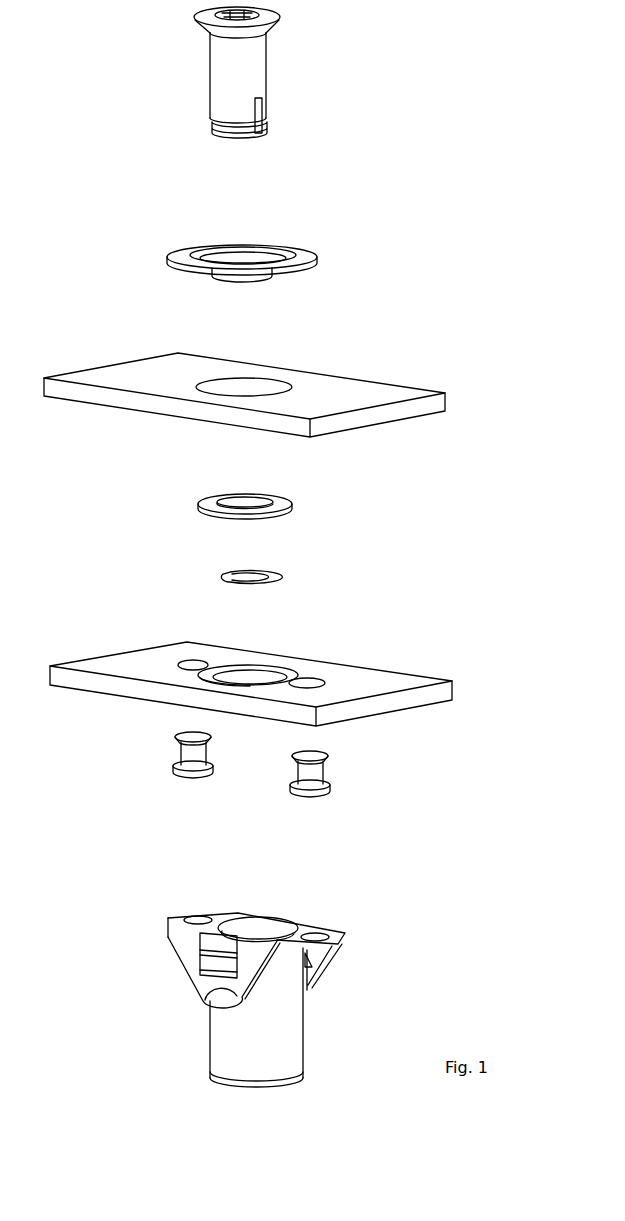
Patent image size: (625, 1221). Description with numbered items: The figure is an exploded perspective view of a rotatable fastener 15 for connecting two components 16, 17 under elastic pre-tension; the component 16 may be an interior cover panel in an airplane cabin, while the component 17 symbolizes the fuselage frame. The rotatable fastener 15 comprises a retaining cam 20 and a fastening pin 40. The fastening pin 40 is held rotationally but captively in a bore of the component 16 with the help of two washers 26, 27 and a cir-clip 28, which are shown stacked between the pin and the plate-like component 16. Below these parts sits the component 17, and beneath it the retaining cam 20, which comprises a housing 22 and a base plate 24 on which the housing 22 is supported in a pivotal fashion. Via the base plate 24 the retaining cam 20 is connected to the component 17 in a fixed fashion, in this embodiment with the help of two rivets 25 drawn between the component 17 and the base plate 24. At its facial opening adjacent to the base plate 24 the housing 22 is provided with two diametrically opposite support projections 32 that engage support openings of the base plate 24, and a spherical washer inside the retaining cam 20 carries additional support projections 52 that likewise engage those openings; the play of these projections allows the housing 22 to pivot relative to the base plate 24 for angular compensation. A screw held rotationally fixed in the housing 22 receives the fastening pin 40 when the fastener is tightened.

The rotatable fastener 15 is at (462, 533).
The fastening pin 40 is at (240, 73).
The washer 26 is at (296, 263).
The component 16 is at (343, 400).
The washer 27 is at (290, 501).
The cir-clip 28 is at (281, 579).
The component 17 is at (452, 680).
The rivets 25 is at (193, 755).
The retaining cam 20 is at (362, 999).
The base plate 24 is at (300, 929).
The support projections 32 is at (210, 961).
The support projections 52 is at (200, 948).
The housing 22 is at (265, 1058).